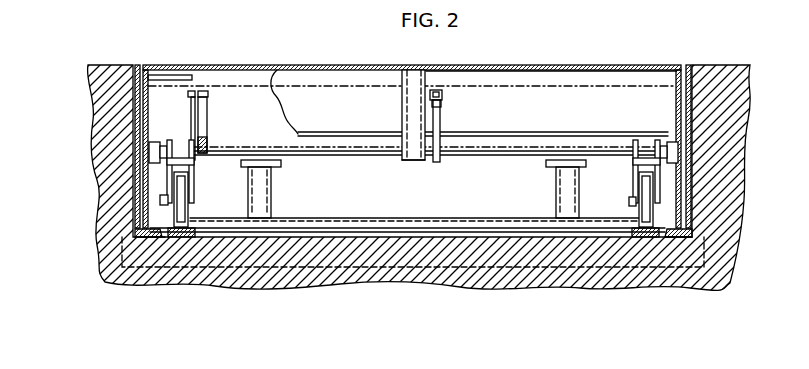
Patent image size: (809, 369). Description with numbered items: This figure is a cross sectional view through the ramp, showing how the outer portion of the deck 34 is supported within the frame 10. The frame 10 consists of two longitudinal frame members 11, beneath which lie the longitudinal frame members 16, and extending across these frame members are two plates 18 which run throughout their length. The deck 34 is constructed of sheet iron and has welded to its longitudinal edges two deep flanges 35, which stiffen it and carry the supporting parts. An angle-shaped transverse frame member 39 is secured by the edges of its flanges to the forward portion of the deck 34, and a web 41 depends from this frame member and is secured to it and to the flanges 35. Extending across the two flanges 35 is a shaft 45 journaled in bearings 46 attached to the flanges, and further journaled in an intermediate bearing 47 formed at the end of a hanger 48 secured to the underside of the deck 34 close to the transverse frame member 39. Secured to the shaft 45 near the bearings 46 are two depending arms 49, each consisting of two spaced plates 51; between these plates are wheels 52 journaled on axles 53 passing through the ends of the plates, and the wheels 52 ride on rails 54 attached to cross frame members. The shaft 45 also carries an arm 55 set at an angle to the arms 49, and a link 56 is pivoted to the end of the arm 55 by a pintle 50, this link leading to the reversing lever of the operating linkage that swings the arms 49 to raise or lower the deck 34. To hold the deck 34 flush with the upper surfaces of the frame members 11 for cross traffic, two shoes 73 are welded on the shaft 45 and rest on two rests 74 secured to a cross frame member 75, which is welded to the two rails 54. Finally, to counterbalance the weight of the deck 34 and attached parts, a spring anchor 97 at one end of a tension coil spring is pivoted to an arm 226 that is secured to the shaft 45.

The frame 10 is at (676, 238).
The longitudinal frame member 11 is at (136, 64).
The longitudinal frame member 16 is at (150, 238).
The plate 18 is at (136, 92).
The deck 34 is at (324, 65).
The flange 35 is at (152, 118).
The transverse frame member 39 is at (541, 71).
The web 41 is at (577, 107).
The shaft 45 is at (342, 152).
The bearing 46 is at (156, 153).
The intermediate bearing 47 is at (418, 160).
The hanger 48 is at (410, 107).
The depending arm 49 is at (174, 207).
The pintle 50 is at (208, 98).
The plate 51 is at (165, 182).
The wheel 52 is at (128, 240).
The axle 53 is at (163, 203).
The rail 54 is at (181, 238).
The arm 55 is at (194, 116).
The link 56 is at (206, 124).
The shoe 73 is at (281, 165).
The rest 74 is at (271, 197).
The cross frame member 75 is at (365, 227).
The spring anchor 97 is at (443, 102).
The arm 226 is at (440, 122).